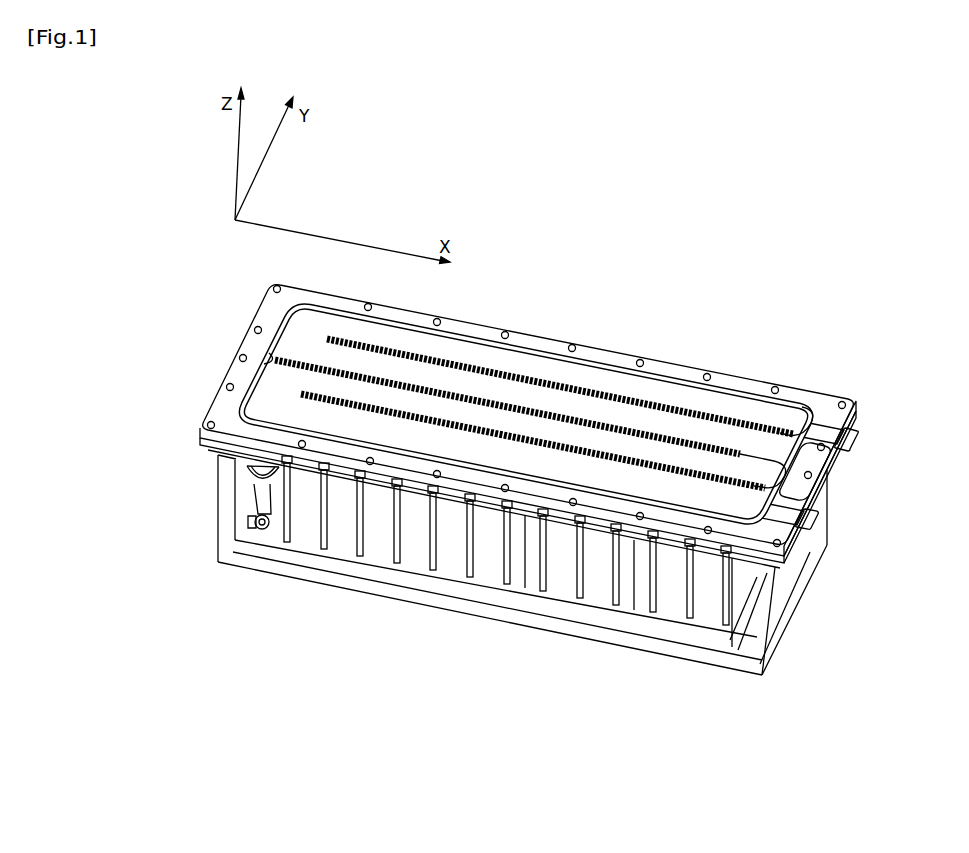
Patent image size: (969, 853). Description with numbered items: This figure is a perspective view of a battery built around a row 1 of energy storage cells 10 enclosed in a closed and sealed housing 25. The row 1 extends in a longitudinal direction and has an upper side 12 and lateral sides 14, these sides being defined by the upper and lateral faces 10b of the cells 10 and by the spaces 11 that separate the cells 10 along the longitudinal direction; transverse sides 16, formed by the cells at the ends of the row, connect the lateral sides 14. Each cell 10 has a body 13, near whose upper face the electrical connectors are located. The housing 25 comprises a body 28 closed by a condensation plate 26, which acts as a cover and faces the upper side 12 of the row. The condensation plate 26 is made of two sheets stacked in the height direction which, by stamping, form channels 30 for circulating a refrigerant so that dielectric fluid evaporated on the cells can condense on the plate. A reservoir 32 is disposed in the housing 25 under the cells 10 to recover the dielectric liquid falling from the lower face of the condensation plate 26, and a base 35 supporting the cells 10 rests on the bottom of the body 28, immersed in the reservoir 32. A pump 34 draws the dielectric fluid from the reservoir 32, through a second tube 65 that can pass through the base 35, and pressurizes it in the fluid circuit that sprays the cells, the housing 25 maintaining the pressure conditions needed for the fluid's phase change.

The row 1 is at (816, 589).
The energy storage cells 10 is at (633, 583).
The lateral faces 10b is at (525, 565).
The spaces 11 is at (650, 598).
The upper side 12 is at (582, 326).
The body 13 is at (672, 607).
The lateral sides 14 is at (445, 569).
The transverse sides 16 is at (747, 579).
The housing 25 is at (132, 403).
The condensation plate 26 is at (211, 412).
The body 28 is at (226, 468).
The channels 30 is at (693, 400).
The reservoir 32 is at (721, 650).
The pump 34 is at (262, 490).
The base 35 is at (310, 558).
The second tube 65 is at (240, 531).